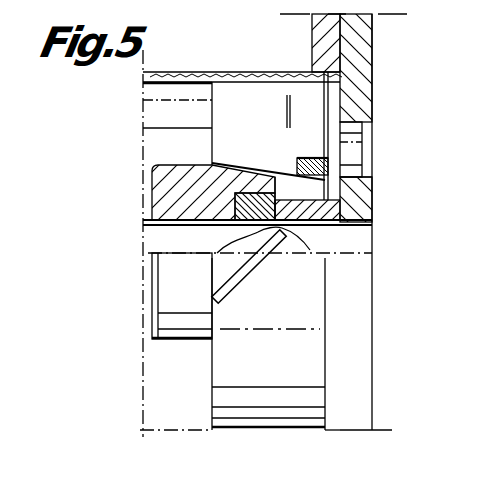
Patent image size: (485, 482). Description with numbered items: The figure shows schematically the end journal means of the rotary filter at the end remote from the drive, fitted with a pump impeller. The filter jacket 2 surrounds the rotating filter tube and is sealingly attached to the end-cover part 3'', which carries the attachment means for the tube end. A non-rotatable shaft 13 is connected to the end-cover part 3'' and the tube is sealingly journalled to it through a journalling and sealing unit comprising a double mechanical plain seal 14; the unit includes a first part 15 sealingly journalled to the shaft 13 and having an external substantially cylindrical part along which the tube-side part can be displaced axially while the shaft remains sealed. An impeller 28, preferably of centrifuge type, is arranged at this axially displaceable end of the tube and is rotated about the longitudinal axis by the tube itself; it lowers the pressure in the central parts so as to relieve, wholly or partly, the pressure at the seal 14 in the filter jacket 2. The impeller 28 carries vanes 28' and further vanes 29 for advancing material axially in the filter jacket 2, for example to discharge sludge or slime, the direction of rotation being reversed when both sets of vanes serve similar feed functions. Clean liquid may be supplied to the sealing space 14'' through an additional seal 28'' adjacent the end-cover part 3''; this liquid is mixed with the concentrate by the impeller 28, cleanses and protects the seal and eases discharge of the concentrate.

The filter jacket 2 is at (190, 72).
The end-cover part 3'' is at (355, 118).
The non-rotatable shaft 13 is at (362, 240).
The double mechanical plain seal 14 is at (287, 198).
The sealing space 14'' is at (354, 196).
The first part 15 is at (160, 178).
The impeller 28 is at (268, 344).
The vanes 28' is at (360, 374).
The additional seal 28'' is at (235, 136).
The vanes 29 is at (233, 284).